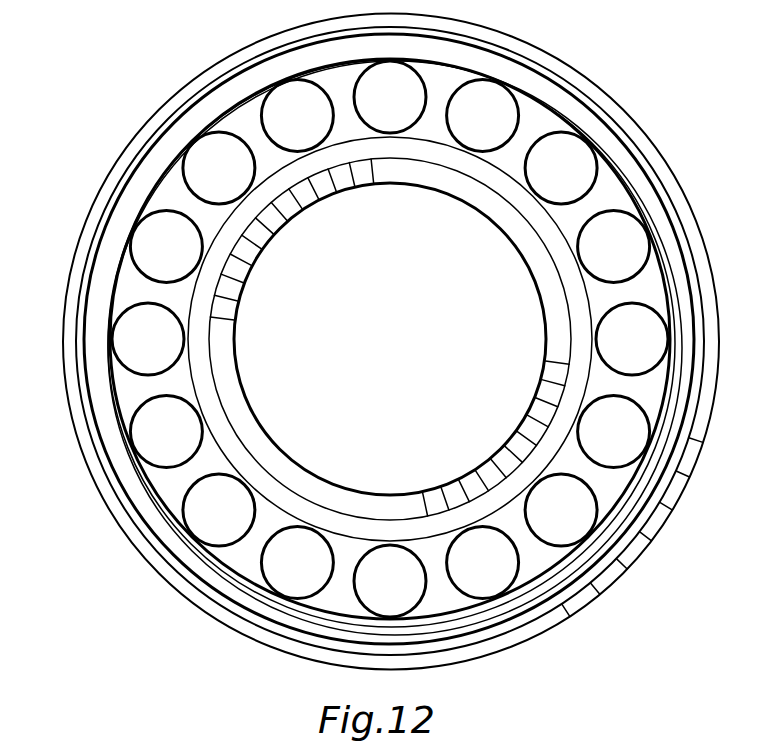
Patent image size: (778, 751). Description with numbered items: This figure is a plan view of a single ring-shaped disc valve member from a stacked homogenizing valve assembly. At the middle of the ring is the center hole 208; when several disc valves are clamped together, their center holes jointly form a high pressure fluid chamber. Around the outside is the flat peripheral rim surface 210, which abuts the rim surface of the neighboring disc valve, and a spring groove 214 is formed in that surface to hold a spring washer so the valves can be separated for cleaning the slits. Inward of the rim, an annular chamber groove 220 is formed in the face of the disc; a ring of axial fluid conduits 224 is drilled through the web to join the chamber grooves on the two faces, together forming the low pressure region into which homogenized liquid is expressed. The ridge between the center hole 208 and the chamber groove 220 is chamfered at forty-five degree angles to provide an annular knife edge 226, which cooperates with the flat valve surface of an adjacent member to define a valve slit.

The center hole 208 is at (414, 361).
The flat peripheral rim surface 210 is at (121, 184).
The spring groove 214 is at (95, 296).
The chamber groove 220 is at (129, 290).
The axial fluid conduit 224 is at (156, 432).
The annular knife edge 226 is at (238, 400).